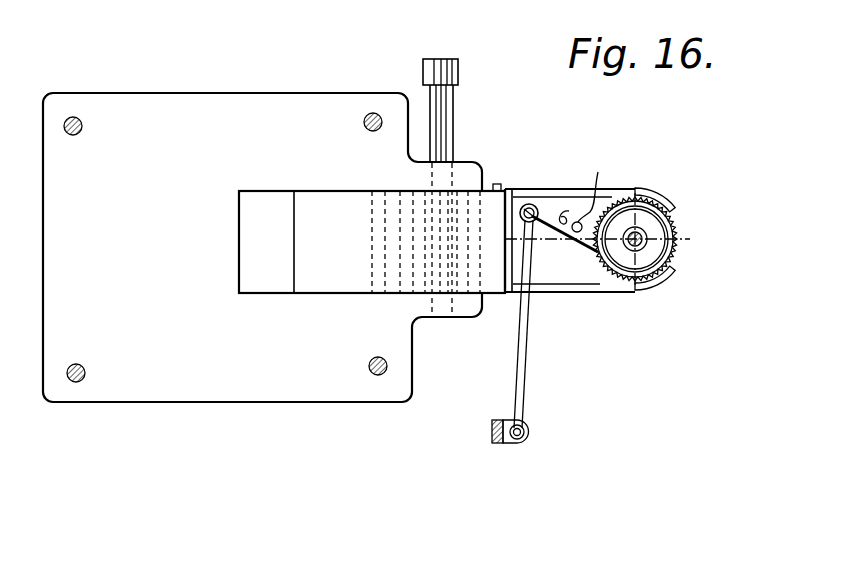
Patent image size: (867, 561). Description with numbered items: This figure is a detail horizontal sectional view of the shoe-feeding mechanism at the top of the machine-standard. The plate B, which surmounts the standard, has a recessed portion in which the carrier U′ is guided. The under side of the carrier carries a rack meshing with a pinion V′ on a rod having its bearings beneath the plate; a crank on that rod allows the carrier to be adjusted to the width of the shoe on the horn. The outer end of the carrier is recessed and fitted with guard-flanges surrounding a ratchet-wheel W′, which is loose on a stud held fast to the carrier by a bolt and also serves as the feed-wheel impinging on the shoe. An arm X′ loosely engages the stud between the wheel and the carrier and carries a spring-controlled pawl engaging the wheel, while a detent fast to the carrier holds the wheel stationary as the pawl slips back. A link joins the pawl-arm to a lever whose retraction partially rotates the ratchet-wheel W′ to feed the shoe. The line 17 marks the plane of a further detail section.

The plate B is at (262, 247).
The carrier U′ is at (372, 240).
The pinion V′ is at (422, 192).
The ratchet-wheel W′ is at (609, 282).
The arm X′ is at (565, 242).
The section line 17 is at (503, 245).